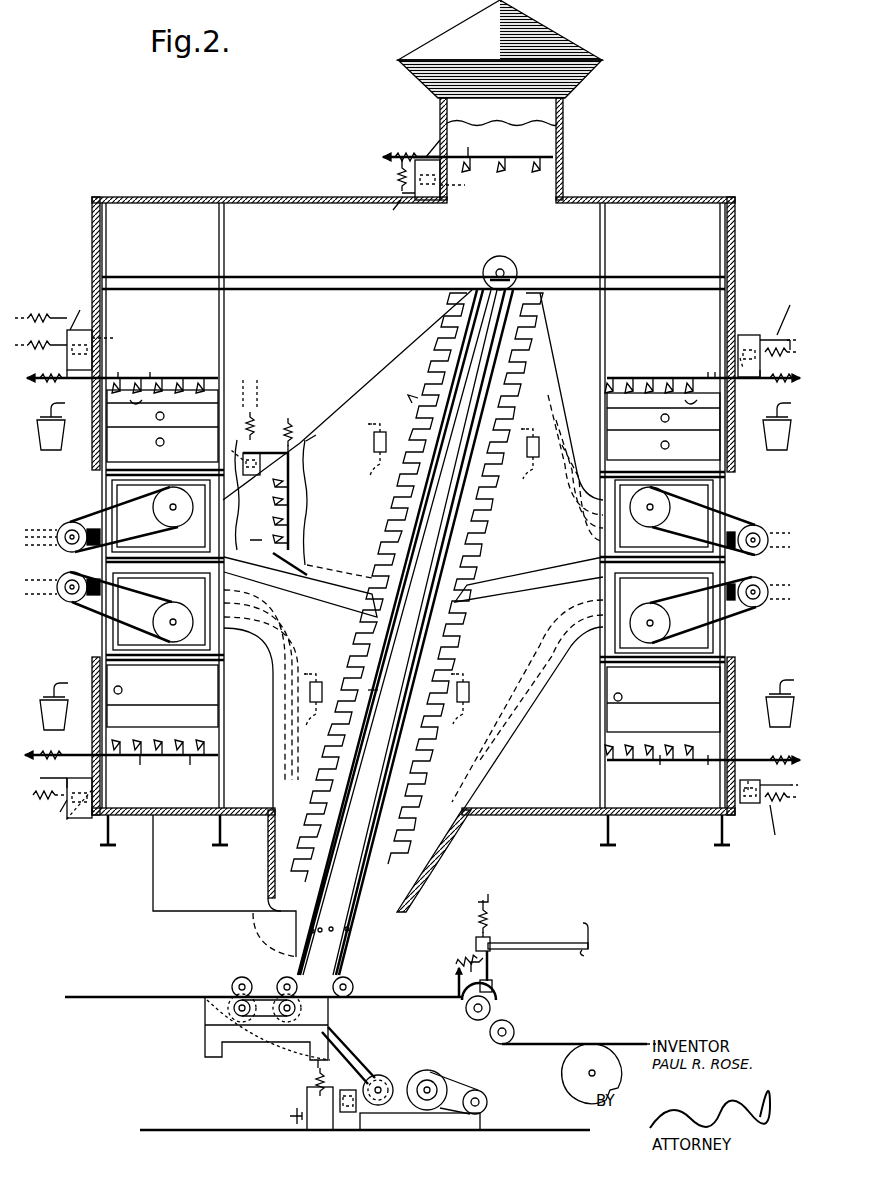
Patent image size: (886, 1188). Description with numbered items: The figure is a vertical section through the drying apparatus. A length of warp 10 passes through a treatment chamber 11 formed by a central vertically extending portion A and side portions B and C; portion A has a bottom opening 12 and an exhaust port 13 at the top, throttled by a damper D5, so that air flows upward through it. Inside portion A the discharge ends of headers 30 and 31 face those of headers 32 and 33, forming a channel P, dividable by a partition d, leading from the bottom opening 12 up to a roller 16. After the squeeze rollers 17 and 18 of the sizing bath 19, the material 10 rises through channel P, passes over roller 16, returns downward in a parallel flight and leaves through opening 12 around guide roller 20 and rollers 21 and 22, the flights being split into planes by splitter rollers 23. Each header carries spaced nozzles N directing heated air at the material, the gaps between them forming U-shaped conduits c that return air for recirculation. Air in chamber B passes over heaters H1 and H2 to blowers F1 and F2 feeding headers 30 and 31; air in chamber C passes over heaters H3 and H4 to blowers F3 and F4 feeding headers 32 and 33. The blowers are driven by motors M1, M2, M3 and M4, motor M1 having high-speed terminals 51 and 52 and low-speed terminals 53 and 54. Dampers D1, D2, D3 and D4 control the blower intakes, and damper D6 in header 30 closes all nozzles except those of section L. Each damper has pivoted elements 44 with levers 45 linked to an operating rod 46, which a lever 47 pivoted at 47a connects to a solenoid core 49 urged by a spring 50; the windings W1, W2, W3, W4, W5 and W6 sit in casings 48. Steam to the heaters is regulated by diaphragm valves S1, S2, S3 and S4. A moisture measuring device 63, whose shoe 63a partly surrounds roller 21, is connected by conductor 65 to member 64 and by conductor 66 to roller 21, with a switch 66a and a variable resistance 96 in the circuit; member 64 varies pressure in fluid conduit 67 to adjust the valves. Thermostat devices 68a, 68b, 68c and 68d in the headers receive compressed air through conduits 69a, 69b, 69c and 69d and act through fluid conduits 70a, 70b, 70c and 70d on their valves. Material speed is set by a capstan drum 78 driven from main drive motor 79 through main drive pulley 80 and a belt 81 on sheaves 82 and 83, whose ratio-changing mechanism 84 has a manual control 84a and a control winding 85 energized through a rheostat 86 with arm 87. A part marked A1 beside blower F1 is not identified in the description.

The length of warp 10 is at (623, 1032).
The treatment chamber 11 is at (530, 815).
The bottom opening 12 is at (400, 912).
The exhaust port 13 is at (563, 180).
The roller 16 is at (510, 265).
The squeeze roller 17 is at (242, 977).
The squeeze roller 18 is at (287, 977).
The sizing bath 19 is at (258, 1042).
The guide roller 20 is at (353, 985).
The roller 21 is at (472, 1018).
The roller 22 is at (512, 1025).
The splitter rollers 23 is at (372, 936).
The header 30 is at (362, 378).
The header 31 is at (262, 650).
The header 32 is at (563, 370).
The header 33 is at (532, 698).
The damper elements 44 is at (688, 412).
The lever 45 is at (425, 569).
The operating rod 46 is at (412, 458).
The lever 47 is at (430, 289).
The pivotal connection 47a is at (412, 524).
The casing 48 is at (750, 803).
The solenoid core 49 is at (405, 505).
The spring 50 is at (300, 424).
The motor terminal 51 is at (58, 528).
The motor terminal 52 is at (35, 519).
The motor terminal 53 is at (35, 557).
The motor terminal 54 is at (60, 552).
The moisture content measuring device 63 is at (492, 986).
The shoe portion 63a is at (496, 1002).
The member 64 is at (495, 941).
The conductor 65 is at (490, 965).
The conductor 66 is at (459, 983).
The switch 66a is at (486, 958).
The fluid conduit 67 is at (596, 944).
The thermostat device 68a is at (386, 440).
The thermostat device 68b is at (322, 690).
The thermostat device 68c is at (527, 452).
The thermostat device 68d is at (457, 700).
The conduit 69a is at (363, 478).
The conduit 69b is at (304, 727).
The conduit 69c is at (518, 483).
The conduit 69d is at (474, 709).
The fluid conduit 70a is at (372, 424).
The fluid conduit 70b is at (308, 674).
The fluid conduit 70c is at (530, 429).
The fluid conduit 70d is at (460, 674).
The capstan roller 78 is at (562, 1068).
The main drive motor 79 is at (478, 1090).
The main drive pulley 80 is at (385, 1076).
The belt 81 is at (430, 1070).
The sheave 82 is at (430, 1130).
The sheave 83 is at (380, 1130).
The ratio-changing mechanism 84 is at (351, 1086).
The manual control 84a is at (280, 1115).
The control winding 85 is at (318, 1083).
The rheostat 86 is at (486, 894).
The rheostat arm 87 is at (476, 944).
The variable resistance 96 is at (455, 960).
The central vertically-extending portion A is at (351, 261).
The side portion B is at (162, 311).
The side portion C is at (665, 311).
The fan housing A1 is at (161, 516).
The damper D1 is at (186, 378).
The damper D2 is at (162, 710).
The damper D3 is at (664, 378).
The damper D4 is at (662, 713).
The damper D5 is at (483, 153).
The damper D6 is at (270, 518).
The heater H1 is at (162, 415).
The heater H2 is at (162, 685).
The heater H3 is at (663, 445).
The heater H4 is at (663, 685).
The air impeller means F1 is at (137, 518).
The air impeller means F2 is at (140, 611).
The air impeller means F3 is at (685, 517).
The air impeller means F4 is at (685, 613).
The motor M1 is at (75, 520).
The motor M2 is at (70, 602).
The motor M3 is at (758, 525).
The motor M4 is at (750, 607).
The diaphragm-actuated control valve S1 is at (40, 444).
The diaphragm-actuated control valve S2 is at (44, 706).
The diaphragm-actuated control valve S3 is at (785, 448).
The diaphragm-actuated control valve S4 is at (785, 724).
The solenoid winding W1 is at (41, 326).
The solenoid winding W2 is at (46, 786).
The solenoid winding W3 is at (780, 335).
The solenoid winding W4 is at (779, 807).
The solenoid winding W5 is at (383, 175).
The solenoid winding W6 is at (265, 410).
The header section L is at (322, 565).
The channel P is at (367, 689).
The air ports or nozzles N is at (405, 397).
The U-shaped channels c is at (430, 362).
The partition d is at (290, 939).